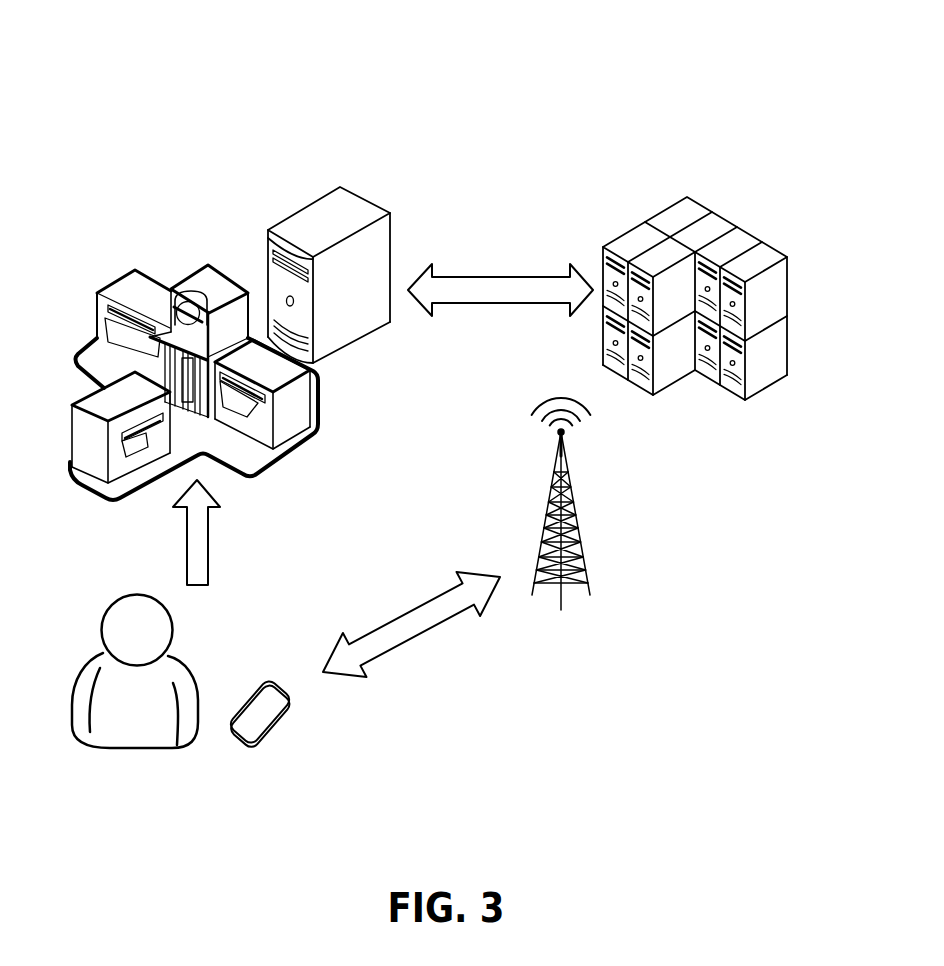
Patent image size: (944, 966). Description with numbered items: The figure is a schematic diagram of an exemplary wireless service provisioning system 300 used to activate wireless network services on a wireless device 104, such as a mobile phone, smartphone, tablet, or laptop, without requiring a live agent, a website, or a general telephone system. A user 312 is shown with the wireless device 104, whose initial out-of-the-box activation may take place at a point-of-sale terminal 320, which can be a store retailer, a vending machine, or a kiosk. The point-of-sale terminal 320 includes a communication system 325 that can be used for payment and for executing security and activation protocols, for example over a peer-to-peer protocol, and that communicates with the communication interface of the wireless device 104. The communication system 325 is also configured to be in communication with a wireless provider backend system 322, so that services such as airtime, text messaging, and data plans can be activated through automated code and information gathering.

The wireless service provisioning system 300 is at (141, 37).
The point-of-sale terminal 320 is at (125, 268).
The communication system 325 is at (297, 222).
The wireless provider backend system 322 is at (795, 337).
The user 312 is at (83, 663).
The wireless device 104 is at (258, 675).